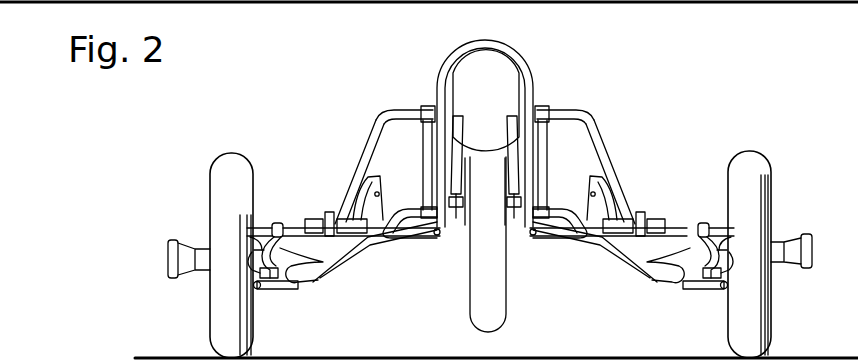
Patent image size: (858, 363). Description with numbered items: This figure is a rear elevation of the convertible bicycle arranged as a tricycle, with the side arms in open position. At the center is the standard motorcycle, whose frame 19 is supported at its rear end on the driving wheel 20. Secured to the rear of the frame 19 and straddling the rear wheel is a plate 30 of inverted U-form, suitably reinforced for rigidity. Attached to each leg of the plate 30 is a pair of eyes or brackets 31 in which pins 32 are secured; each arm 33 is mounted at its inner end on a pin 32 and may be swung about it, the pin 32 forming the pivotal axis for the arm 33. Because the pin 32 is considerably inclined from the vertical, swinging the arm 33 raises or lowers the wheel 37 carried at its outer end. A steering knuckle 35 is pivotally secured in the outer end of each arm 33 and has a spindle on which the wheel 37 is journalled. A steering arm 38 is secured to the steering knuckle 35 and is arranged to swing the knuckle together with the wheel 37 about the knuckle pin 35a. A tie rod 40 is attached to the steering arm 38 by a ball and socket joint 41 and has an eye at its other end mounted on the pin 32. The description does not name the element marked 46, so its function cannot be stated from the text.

The frame 19 is at (455, 212).
The driving wheel 20 is at (500, 288).
The plate 30 is at (530, 73).
The eyes or brackets 31 is at (425, 106).
The pin 32 is at (423, 158).
The arm 33 is at (366, 143).
The steering knuckle 35 is at (257, 270).
The knuckle pin 35a is at (255, 290).
The wheel 37 is at (213, 192).
The steering arm 38 is at (262, 270).
The tie rod 40 is at (397, 234).
The ball and socket joint 41 is at (277, 223).
The bracket 46 is at (353, 203).